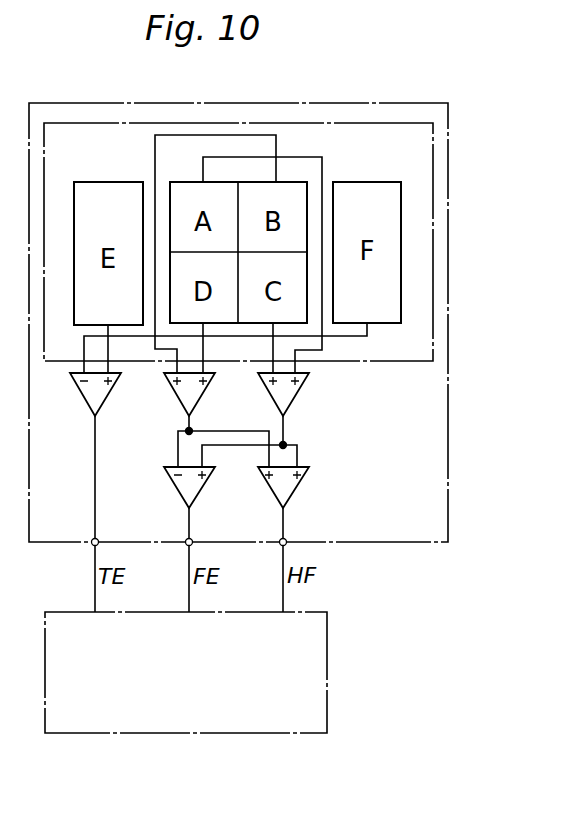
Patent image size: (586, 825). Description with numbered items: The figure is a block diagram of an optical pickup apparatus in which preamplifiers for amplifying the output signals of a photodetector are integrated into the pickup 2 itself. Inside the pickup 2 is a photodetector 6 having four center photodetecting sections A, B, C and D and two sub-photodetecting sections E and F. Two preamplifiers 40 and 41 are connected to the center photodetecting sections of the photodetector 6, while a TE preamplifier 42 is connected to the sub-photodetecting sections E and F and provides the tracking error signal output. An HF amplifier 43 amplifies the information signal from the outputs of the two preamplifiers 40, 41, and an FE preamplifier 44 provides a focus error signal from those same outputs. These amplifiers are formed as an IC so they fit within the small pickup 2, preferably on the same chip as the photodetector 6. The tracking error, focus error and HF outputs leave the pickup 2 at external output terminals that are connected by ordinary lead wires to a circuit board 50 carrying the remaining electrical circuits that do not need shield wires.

The pickup 2 is at (448, 312).
The photodetector 6 is at (391, 154).
The preamplifier 40 is at (289, 392).
The preamplifier 41 is at (194, 392).
The TE preamplifier 42 is at (98, 392).
The HF amplifier 43 is at (289, 485).
The FE preamplifier 44 is at (194, 485).
The circuit board 50 is at (327, 655).